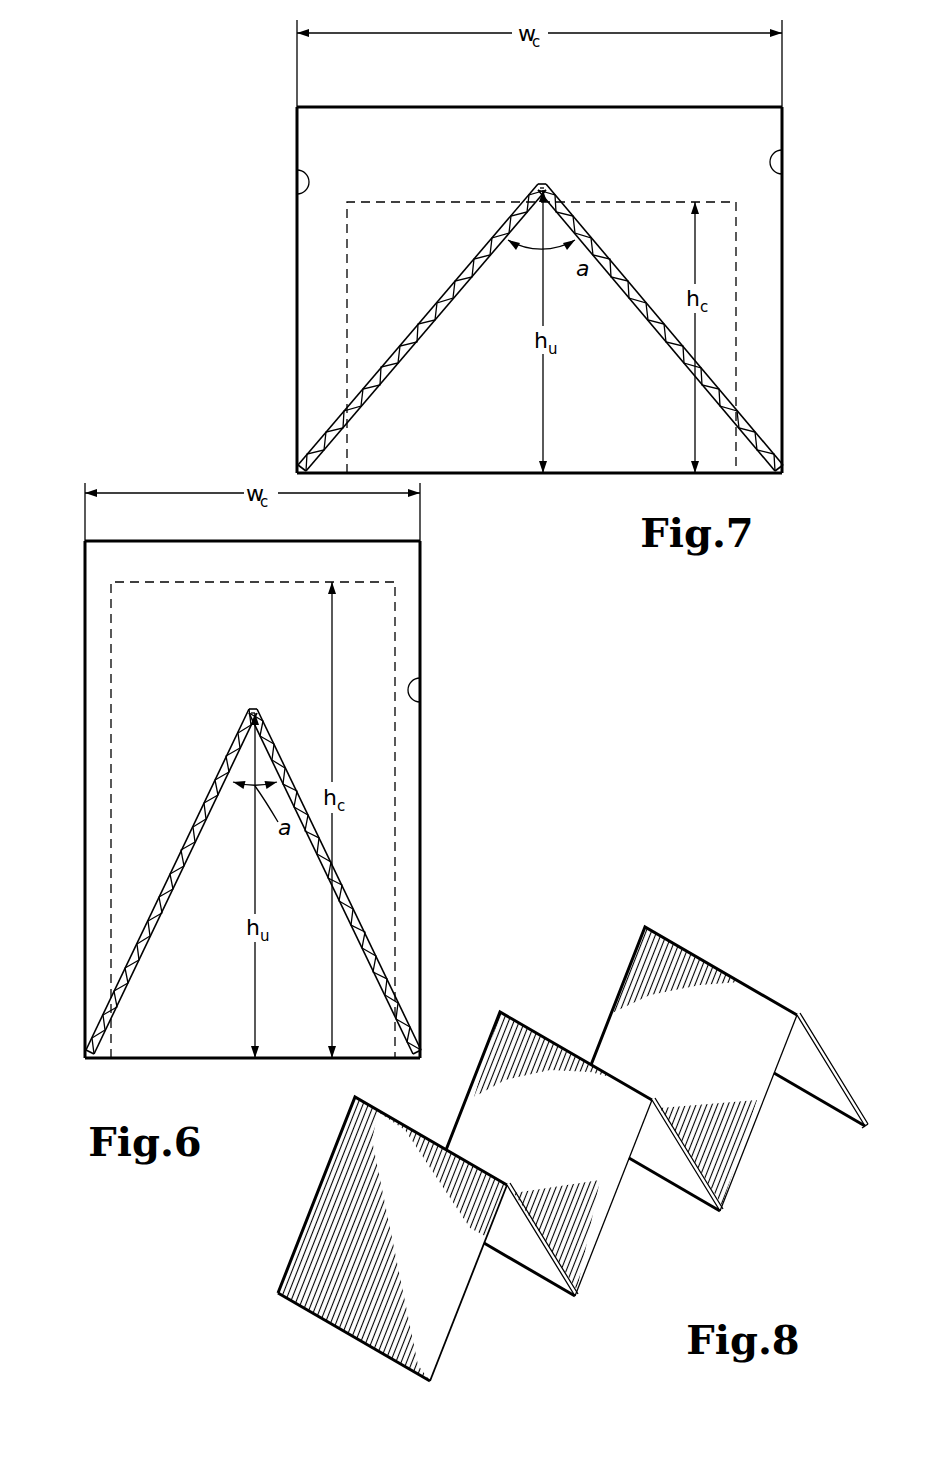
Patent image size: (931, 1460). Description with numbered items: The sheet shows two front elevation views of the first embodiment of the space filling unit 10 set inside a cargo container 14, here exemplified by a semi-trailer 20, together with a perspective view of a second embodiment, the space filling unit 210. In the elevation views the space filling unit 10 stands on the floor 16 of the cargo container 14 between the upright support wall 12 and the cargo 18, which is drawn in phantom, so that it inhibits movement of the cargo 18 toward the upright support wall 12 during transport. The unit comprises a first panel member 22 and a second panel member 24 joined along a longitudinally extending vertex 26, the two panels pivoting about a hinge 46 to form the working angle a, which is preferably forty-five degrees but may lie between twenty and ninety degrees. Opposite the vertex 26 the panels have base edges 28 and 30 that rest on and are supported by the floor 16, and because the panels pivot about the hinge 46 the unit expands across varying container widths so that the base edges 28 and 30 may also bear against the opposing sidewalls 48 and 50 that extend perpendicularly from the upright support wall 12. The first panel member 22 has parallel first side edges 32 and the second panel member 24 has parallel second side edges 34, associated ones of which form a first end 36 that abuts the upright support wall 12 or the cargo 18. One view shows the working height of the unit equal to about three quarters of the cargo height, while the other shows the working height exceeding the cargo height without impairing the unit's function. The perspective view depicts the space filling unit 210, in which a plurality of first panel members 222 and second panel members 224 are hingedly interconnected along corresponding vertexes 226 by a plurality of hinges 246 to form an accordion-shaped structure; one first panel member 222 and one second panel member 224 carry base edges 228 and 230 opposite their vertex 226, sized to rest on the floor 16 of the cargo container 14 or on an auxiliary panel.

In FIG. 7, the space filling unit 10 is at (530, 310).
In FIG. 6, the space filling unit 10 is at (247, 864).
In FIG. 7, the upright support wall 12 is at (381, 164).
In FIG. 6, the upright support wall 12 is at (151, 640).
In FIG. 7, the cargo container 14 is at (549, 259).
In FIG. 6, the cargo container 14 is at (263, 777).
In FIG. 7, the floor 16 is at (580, 472).
In FIG. 6, the floor 16 is at (145, 1057).
In FIG. 7, the cargo 18 is at (635, 201).
In FIG. 6, the cargo 18 is at (200, 581).
In FIG. 7, the semi-trailer 20 is at (700, 105).
In FIG. 6, the semi-trailer 20 is at (155, 540).
In FIG. 7, the first panel member 22 is at (422, 327).
In FIG. 6, the first panel member 22 is at (171, 881).
In FIG. 7, the second panel member 24 is at (660, 327).
In FIG. 6, the second panel member 24 is at (335, 881).
In FIG. 7, the longitudinally extending vertex 26 is at (545, 182).
In FIG. 6, the longitudinally extending vertex 26 is at (256, 706).
In FIG. 7, the base edge 28 is at (300, 468).
In FIG. 6, the base edge 28 is at (88, 1052).
In FIG. 7, the base edge 30 is at (787, 470).
In FIG. 6, the base edge 30 is at (422, 1053).
In FIG. 7, the first side edges 32 is at (365, 395).
In FIG. 6, the first side edges 32 is at (145, 935).
In FIG. 7, the second side edges 34 is at (655, 322).
In FIG. 6, the second side edges 34 is at (320, 858).
In FIG. 7, the first end 36 is at (433, 315).
In FIG. 6, the first end 36 is at (182, 872).
In FIG. 7, the hinge 46 is at (540, 184).
In FIG. 6, the hinge 46 is at (250, 708).
In FIG. 7, the sidewall 48 is at (297, 185).
In FIG. 6, the sidewall 48 is at (85, 783).
In FIG. 7, the sidewall 50 is at (790, 155).
In FIG. 6, the sidewall 50 is at (428, 688).
In FIG. 8, the space filling unit 210 is at (524, 1132).
In FIG. 8, the first panel members 222 is at (350, 1256).
In FIG. 8, the second panel members 224 is at (830, 1087).
In FIG. 8, the vertexes 226 is at (478, 1178).
In FIG. 8, the base edge 228 is at (375, 1352).
In FIG. 8, the base edge 230 is at (867, 1122).
In FIG. 8, the hinges 246 is at (448, 1145).